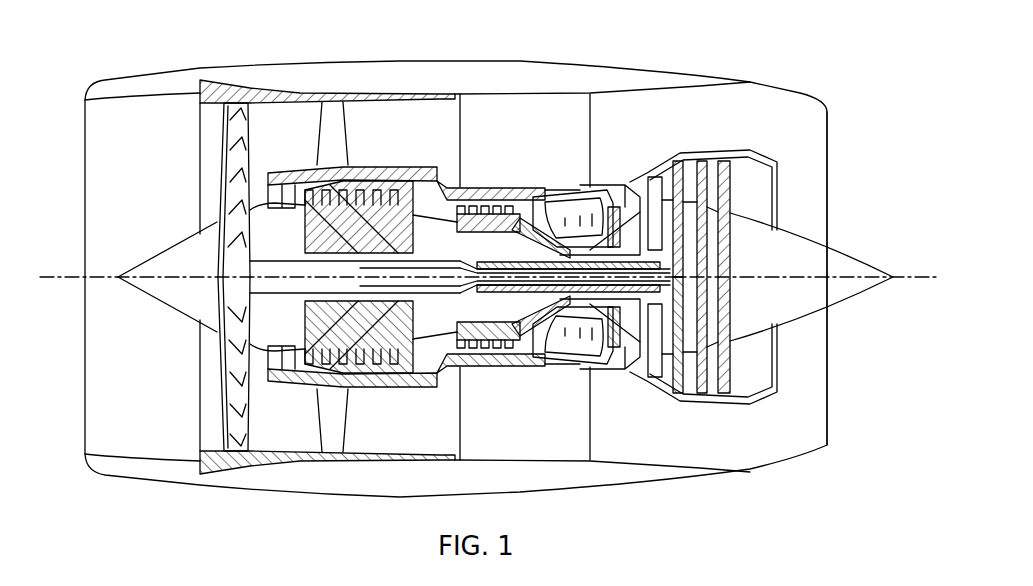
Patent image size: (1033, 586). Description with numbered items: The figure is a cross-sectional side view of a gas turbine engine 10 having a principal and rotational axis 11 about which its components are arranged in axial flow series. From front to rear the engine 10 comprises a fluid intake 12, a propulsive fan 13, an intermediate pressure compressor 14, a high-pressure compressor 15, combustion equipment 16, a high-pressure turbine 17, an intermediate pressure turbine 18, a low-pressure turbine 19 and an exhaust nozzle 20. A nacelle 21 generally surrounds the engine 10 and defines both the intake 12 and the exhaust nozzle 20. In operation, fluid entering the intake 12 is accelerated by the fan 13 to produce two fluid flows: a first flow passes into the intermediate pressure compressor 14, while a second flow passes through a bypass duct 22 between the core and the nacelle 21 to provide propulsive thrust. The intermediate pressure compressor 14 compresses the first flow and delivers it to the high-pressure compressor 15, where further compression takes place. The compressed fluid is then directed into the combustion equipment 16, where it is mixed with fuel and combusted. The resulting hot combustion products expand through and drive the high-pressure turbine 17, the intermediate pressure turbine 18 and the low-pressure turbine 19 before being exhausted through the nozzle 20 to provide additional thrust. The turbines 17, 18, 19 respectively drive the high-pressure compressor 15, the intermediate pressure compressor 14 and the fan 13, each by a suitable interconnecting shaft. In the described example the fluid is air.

The gas turbine engine 10 is at (485, 253).
The principal and rotational axis 11 is at (80, 278).
The fluid intake 12 is at (142, 94).
The propulsive fan 13 is at (212, 405).
The intermediate pressure compressor 14 is at (360, 370).
The high-pressure compressor 15 is at (490, 205).
The combustion equipment 16 is at (537, 370).
The high-pressure turbine 17 is at (600, 372).
The intermediate pressure turbine 18 is at (660, 182).
The low-pressure turbine 19 is at (656, 385).
The exhaust nozzle 20 is at (829, 447).
The nacelle 21 is at (656, 68).
The bypass duct 22 is at (405, 144).